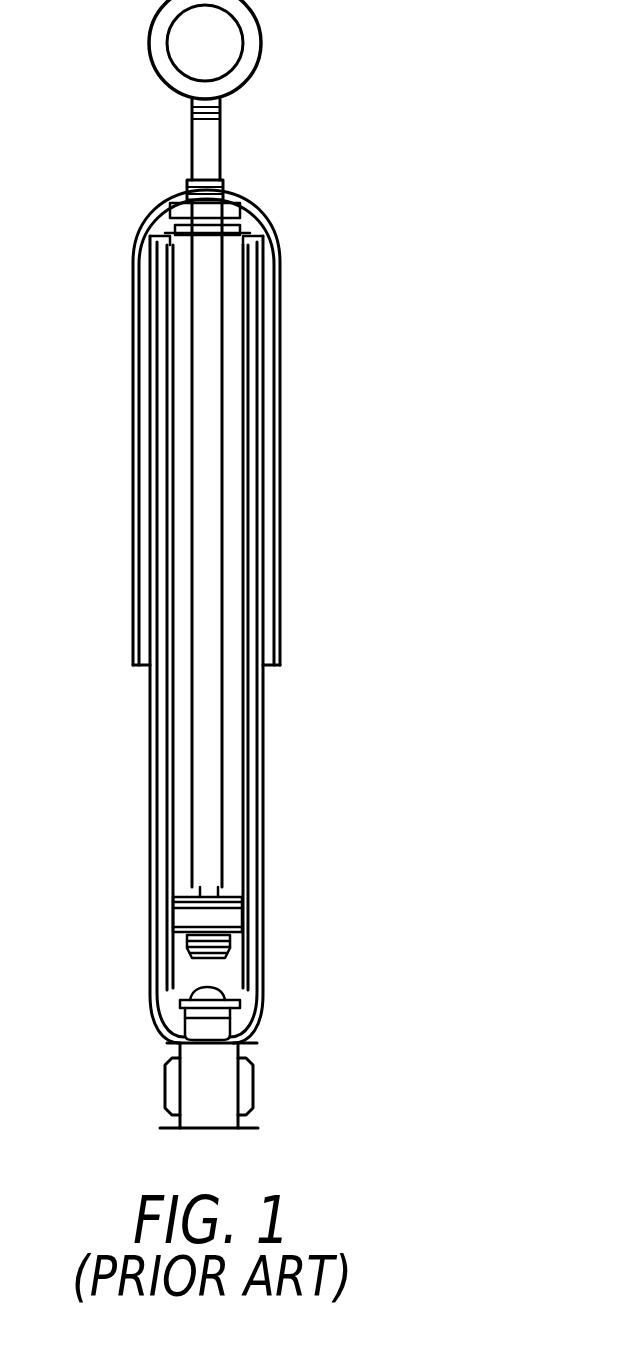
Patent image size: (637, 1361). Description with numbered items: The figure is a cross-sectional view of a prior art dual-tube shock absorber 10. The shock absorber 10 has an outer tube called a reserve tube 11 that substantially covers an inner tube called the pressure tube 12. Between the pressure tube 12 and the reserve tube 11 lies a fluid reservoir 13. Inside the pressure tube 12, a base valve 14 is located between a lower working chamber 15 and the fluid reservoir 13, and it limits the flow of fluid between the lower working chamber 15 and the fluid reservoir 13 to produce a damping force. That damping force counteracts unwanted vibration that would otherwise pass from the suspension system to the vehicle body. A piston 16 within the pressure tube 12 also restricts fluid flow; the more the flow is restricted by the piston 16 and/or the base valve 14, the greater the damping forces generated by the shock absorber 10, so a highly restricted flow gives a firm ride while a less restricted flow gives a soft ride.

The dual-tube shock absorber 10 is at (266, 564).
The reserve tube 11 is at (263, 472).
The pressure tube 12 is at (250, 757).
The fluid reservoir 13 is at (255, 830).
The base valve 14 is at (215, 1027).
The lower working chamber 15 is at (190, 967).
The piston 16 is at (187, 915).